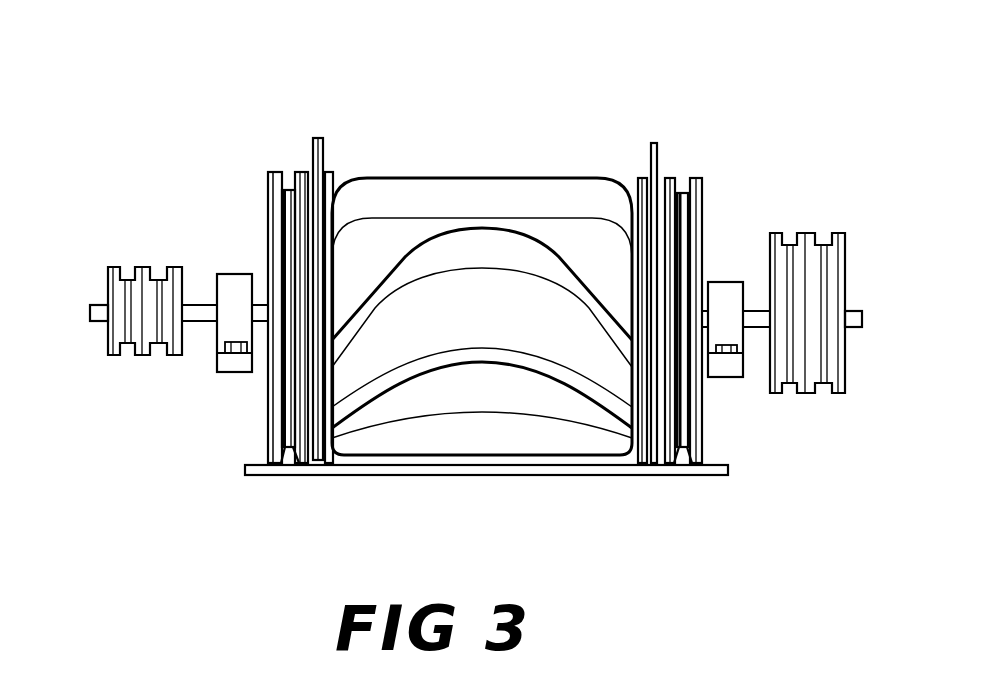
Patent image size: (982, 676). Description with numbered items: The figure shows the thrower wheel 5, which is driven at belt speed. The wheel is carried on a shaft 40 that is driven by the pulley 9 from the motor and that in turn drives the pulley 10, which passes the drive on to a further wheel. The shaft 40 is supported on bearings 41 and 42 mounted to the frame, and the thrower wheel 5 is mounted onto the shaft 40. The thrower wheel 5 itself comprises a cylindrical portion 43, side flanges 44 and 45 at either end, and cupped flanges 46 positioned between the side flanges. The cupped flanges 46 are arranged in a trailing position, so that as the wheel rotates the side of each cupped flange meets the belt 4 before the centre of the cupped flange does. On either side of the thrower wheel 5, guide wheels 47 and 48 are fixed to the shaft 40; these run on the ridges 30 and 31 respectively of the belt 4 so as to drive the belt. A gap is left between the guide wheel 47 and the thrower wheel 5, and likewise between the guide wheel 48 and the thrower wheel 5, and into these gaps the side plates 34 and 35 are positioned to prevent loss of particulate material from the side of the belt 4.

The belt 4 is at (348, 468).
The thrower wheel 5 is at (517, 128).
The pulley 9 is at (807, 388).
The pulley 10 is at (110, 283).
The ridge 30 is at (287, 458).
The ridge 31 is at (684, 466).
The side plate 34 is at (316, 158).
The side plate 35 is at (655, 150).
The shaft 40 is at (855, 315).
The bearing 41 is at (727, 373).
The bearing 42 is at (230, 367).
The cylindrical portion 43 is at (443, 295).
The side flange 44 is at (330, 172).
The side flange 45 is at (660, 162).
The cupped flanges 46 is at (556, 257).
The guide wheel 47 is at (273, 217).
The guide wheel 48 is at (705, 188).